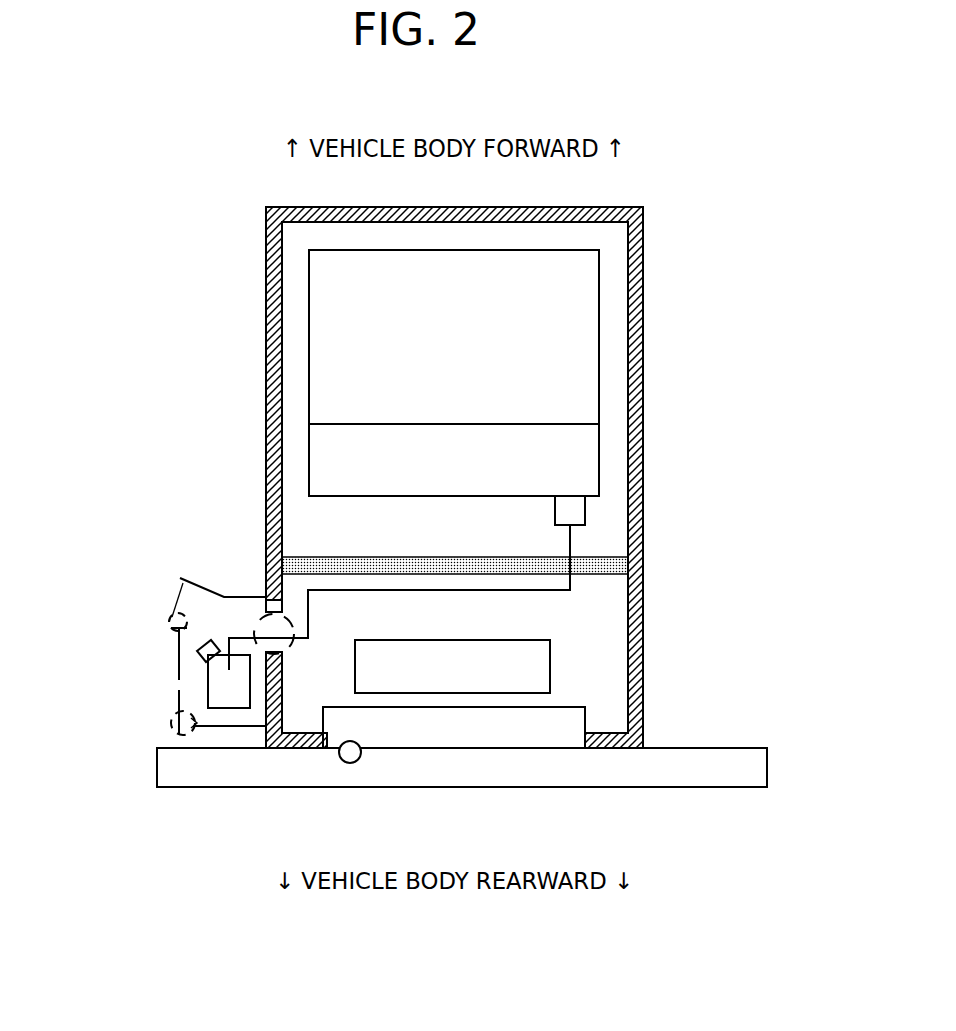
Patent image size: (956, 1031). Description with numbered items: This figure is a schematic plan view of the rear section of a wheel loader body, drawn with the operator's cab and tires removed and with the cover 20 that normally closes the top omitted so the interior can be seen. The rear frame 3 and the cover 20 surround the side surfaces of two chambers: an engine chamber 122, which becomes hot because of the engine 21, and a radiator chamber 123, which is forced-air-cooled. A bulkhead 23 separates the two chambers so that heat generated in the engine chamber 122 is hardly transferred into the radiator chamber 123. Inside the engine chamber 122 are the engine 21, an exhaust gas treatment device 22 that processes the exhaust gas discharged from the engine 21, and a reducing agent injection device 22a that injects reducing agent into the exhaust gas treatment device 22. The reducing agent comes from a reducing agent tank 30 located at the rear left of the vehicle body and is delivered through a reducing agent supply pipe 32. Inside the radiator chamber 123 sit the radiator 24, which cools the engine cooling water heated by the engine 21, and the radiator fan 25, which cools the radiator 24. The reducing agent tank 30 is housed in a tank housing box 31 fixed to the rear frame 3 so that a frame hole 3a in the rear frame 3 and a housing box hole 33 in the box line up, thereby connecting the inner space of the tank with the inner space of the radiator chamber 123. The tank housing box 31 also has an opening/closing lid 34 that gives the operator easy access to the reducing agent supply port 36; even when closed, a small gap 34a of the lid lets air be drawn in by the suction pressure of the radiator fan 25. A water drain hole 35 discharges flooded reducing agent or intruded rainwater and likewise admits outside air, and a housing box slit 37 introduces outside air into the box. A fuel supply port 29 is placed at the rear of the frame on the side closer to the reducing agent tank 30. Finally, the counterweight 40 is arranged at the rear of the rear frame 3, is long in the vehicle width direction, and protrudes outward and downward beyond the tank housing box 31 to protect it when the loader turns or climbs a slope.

The rear frame 3 is at (266, 278).
The cover 20 is at (396, 477).
The engine 21 is at (599, 278).
The engine chamber 122 is at (610, 390).
The exhaust gas treatment device 22 is at (599, 452).
The reducing agent injection device 22a is at (585, 510).
The bulkhead 23 is at (603, 557).
The radiator chamber 123 is at (598, 611).
The radiator 24 is at (550, 663).
The radiator fan 25 is at (585, 718).
The counterweight 40 is at (767, 765).
The fuel supply port 29 is at (339, 760).
The reducing agent supply pipe 32 is at (345, 588).
The housing box hole 33 is at (257, 618).
The frame hole 3a is at (274, 606).
The opening/closing lid 34 is at (183, 581).
The gap of the opening/closing lid 34a is at (165, 622).
The reducing agent supply port 36 is at (178, 641).
The tank housing box 31 is at (205, 657).
The housing box slit 37 is at (175, 680).
The reducing agent tank 30 is at (207, 697).
The water drain hole 35 is at (170, 718).